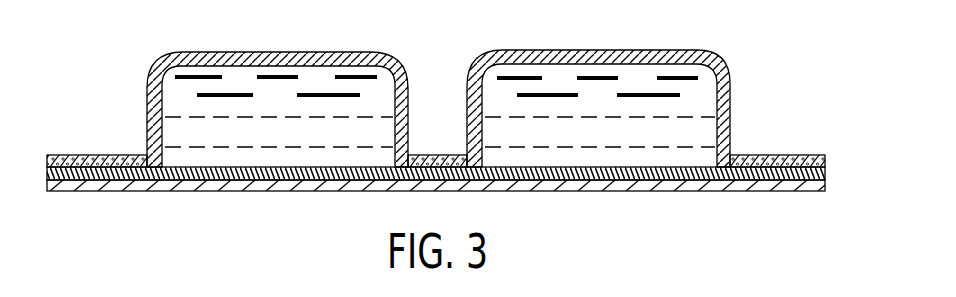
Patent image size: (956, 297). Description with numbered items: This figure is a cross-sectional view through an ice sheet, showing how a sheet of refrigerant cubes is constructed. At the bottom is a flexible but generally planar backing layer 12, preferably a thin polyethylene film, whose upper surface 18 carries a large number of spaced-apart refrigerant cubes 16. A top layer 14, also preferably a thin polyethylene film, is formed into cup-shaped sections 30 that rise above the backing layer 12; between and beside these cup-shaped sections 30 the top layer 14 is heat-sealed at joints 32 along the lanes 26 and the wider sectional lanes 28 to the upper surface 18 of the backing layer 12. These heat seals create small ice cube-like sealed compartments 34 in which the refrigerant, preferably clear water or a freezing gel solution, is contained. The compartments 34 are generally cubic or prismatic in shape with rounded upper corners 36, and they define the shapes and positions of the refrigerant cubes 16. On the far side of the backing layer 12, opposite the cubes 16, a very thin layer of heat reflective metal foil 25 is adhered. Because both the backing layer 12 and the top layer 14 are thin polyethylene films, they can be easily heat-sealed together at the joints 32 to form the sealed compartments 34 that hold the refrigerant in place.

The backing layer 12 is at (198, 180).
The top layer 14 is at (752, 155).
The refrigerant cubes 16 is at (613, 143).
The upper surface 18 is at (267, 166).
The heat reflective metal foil 25 is at (322, 191).
The lanes 26 is at (448, 157).
The sectional lanes 28 is at (72, 155).
The cup-shaped sections 30 is at (275, 50).
The joints 32 is at (102, 155).
The sealed compartments 34 is at (318, 73).
The rounded upper corners 36 is at (157, 62).